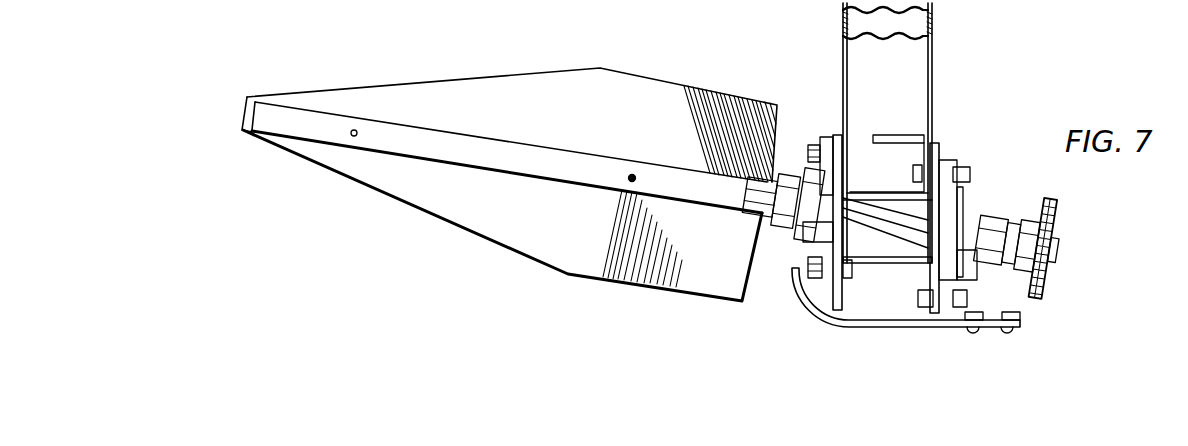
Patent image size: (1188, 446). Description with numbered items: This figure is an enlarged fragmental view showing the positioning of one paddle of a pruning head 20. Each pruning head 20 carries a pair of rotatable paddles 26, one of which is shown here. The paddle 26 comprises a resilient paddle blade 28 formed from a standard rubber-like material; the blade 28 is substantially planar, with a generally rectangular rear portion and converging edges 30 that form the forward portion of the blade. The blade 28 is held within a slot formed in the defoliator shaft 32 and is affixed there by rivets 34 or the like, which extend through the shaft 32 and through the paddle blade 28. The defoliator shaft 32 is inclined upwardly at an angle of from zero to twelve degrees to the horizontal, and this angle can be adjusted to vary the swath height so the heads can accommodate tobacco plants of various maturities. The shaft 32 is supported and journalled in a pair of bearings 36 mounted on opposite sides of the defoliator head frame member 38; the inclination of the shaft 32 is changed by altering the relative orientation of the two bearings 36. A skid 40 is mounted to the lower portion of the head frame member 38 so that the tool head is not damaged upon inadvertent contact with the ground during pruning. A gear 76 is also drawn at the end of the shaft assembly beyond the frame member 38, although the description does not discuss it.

The pruning head 20 is at (125, 0).
The rotatable paddle 26 is at (630, 72).
The resilient paddle blade 28 is at (460, 200).
The converging edges 30 is at (348, 87).
The defoliator shaft 32 is at (738, 188).
The rivets 34 is at (348, 135).
The bearings 36 is at (813, 202).
The defoliator head frame member 38 is at (905, 255).
The skid 40 is at (940, 323).
The gear 76 is at (1052, 238).